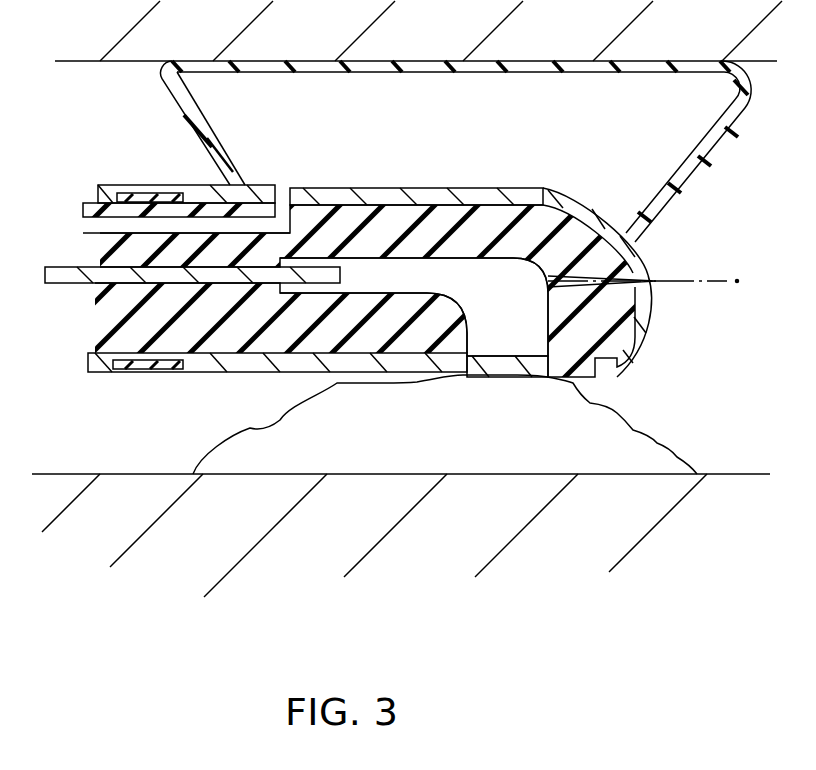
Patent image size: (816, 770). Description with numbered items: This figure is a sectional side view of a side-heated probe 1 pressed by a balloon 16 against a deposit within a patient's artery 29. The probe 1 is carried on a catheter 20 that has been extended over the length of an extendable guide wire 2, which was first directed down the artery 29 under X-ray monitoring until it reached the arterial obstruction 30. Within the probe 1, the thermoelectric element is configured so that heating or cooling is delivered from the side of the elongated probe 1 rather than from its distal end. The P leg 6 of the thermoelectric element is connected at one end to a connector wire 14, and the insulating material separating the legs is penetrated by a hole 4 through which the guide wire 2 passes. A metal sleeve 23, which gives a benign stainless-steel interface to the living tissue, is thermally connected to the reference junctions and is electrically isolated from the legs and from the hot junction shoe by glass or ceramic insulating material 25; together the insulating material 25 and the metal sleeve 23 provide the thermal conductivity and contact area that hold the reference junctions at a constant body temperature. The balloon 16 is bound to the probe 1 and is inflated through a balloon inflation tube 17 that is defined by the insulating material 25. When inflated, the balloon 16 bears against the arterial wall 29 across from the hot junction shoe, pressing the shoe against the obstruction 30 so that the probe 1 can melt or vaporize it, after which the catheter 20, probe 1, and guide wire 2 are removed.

The probe 1 is at (630, 395).
The guide wire 2 is at (682, 281).
The hole 4 is at (652, 284).
The P leg 6 is at (516, 303).
The connector wire 14 is at (76, 278).
The balloon 16 is at (743, 118).
The balloon inflation tube 17 is at (87, 222).
The catheter 20 is at (127, 367).
The metal sleeve 23 is at (638, 353).
The insulating material 25 is at (107, 243).
The artery 29 is at (744, 471).
The obstruction 30 is at (285, 427).